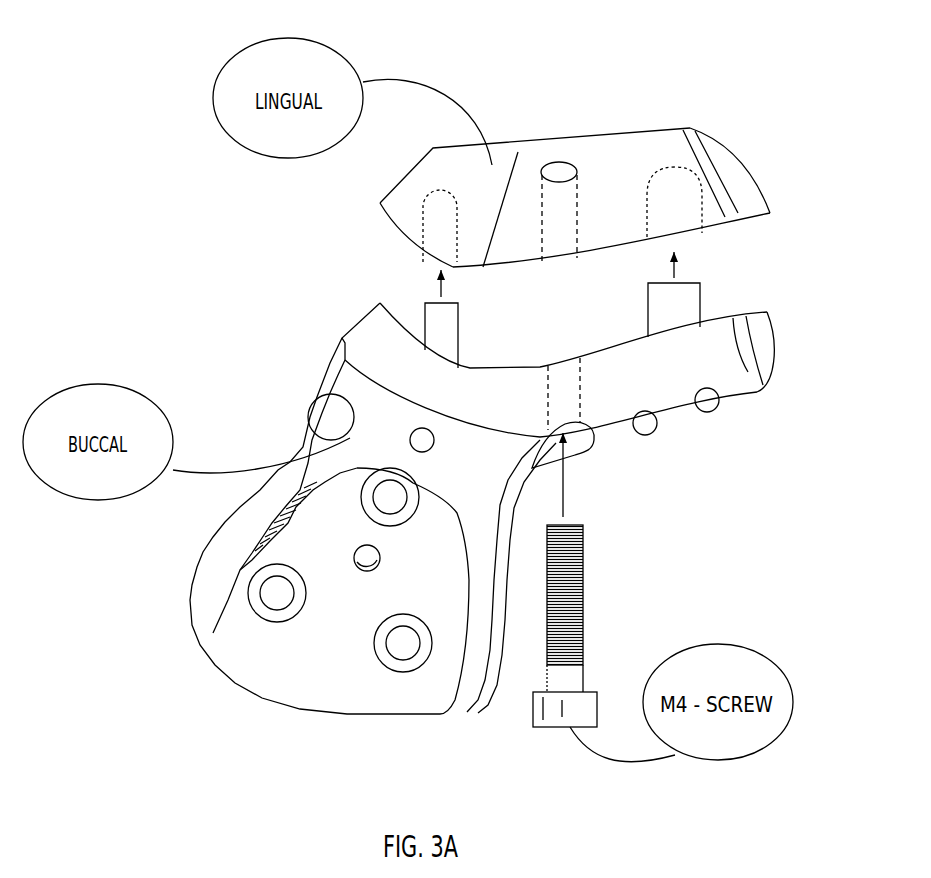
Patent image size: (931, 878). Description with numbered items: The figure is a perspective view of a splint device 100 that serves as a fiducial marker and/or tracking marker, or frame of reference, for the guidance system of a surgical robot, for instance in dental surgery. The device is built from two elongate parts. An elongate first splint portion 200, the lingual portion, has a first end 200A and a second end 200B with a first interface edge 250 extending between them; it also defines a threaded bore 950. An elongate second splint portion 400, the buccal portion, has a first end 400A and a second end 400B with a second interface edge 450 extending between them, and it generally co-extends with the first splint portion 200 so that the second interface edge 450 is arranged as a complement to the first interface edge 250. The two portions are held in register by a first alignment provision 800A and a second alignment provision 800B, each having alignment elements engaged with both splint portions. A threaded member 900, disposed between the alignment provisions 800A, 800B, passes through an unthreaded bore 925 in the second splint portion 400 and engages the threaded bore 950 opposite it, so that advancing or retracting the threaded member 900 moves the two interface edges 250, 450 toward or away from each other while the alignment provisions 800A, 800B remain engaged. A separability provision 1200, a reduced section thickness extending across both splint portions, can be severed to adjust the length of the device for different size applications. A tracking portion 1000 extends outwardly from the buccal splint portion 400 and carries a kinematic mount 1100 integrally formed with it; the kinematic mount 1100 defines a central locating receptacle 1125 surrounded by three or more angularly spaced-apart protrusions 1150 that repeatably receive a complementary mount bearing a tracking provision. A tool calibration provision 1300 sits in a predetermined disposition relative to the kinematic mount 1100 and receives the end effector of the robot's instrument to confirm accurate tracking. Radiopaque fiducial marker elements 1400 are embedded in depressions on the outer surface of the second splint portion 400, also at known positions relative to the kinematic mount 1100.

The splint device 100 is at (502, 92).
The first splint portion 200 is at (554, 194).
The first longitudinal end of first splint portion 200A is at (764, 176).
The second longitudinal end of first splint portion 200B is at (385, 187).
The first interface edge 250 is at (508, 273).
The threaded bore 950 is at (557, 162).
The separability provision 1200 is at (690, 127).
The first alignment provision 800A is at (723, 287).
The second alignment provision 800B is at (405, 268).
The second splint portion 400 is at (475, 522).
The first longitudinal end of second splint portion 400A is at (780, 343).
The second longitudinal end of second splint portion 400B is at (357, 313).
The second interface edge 450 is at (610, 347).
The unthreaded bore 925 is at (578, 442).
The threaded member 900 is at (570, 615).
The fiducial marker element 1400 is at (422, 436).
The tool calibration provision 1300 is at (325, 412).
The tracking portion 1000 is at (278, 450).
The kinematic mount 1100 is at (257, 647).
The central locating receptacle 1125 is at (364, 553).
The protrusions 1150 is at (273, 592).